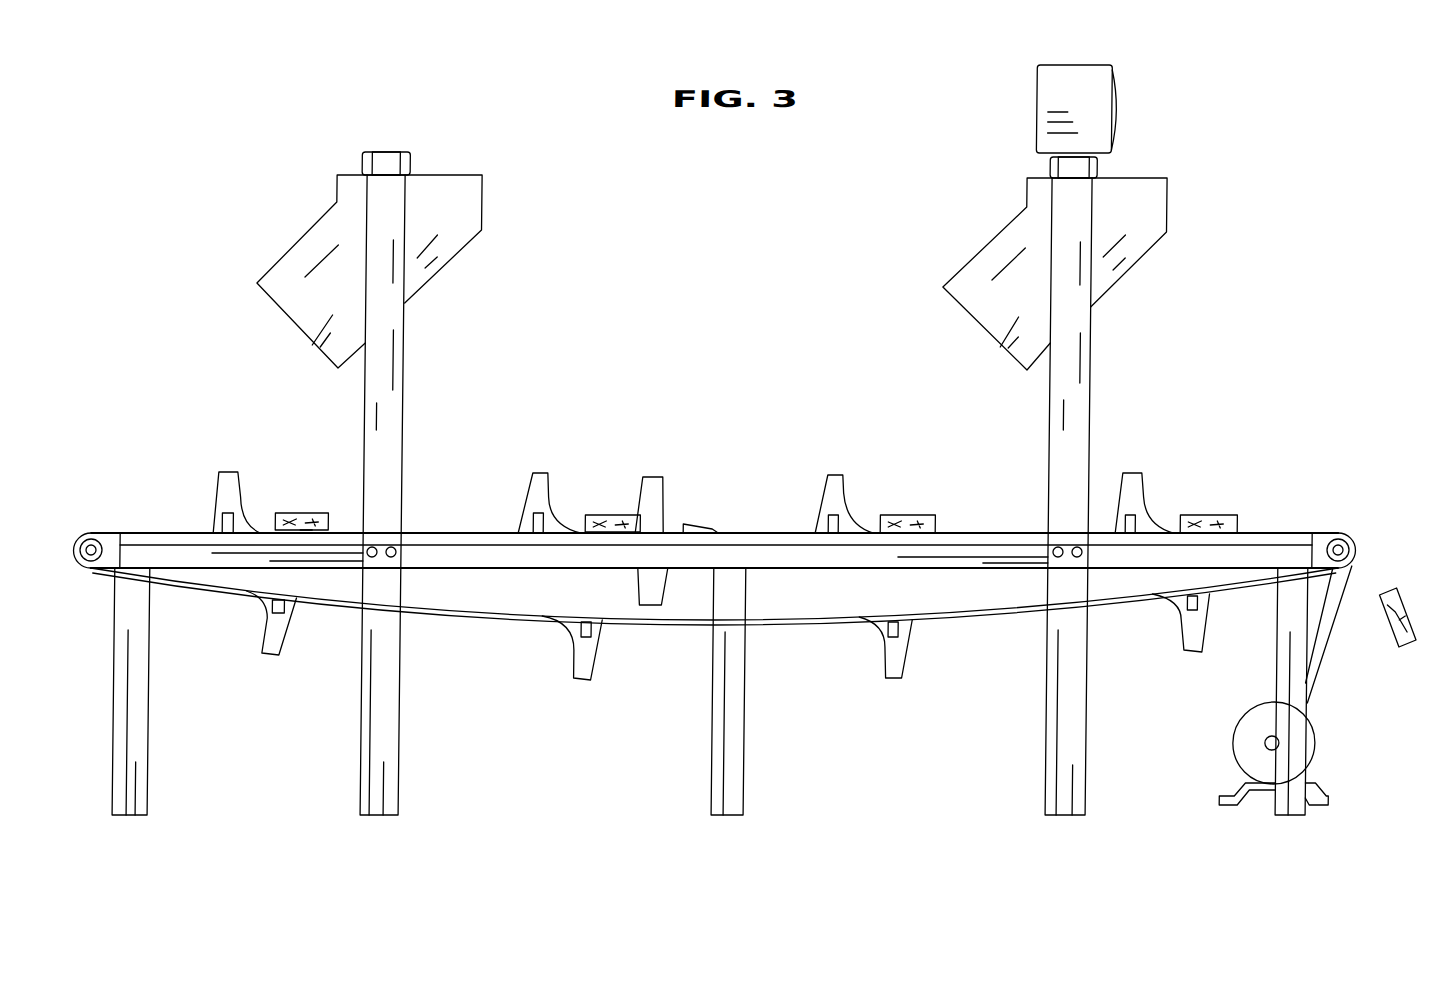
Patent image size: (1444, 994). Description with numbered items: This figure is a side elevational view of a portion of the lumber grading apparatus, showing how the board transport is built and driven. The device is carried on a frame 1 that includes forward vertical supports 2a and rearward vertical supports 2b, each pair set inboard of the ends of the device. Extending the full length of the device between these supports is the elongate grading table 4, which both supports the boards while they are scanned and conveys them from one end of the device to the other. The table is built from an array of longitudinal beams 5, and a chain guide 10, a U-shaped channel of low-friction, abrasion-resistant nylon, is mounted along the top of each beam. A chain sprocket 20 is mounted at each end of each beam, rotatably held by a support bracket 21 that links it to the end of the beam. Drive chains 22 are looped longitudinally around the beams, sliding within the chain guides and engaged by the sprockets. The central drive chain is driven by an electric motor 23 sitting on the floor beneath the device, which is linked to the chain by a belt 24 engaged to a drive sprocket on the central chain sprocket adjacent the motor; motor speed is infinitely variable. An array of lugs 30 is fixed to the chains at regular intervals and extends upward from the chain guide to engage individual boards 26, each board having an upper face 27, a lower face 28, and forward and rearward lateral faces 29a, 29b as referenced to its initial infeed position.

The frame 1 is at (478, 431).
The forward vertical supports 2a is at (1068, 383).
The rearward vertical supports 2b is at (387, 397).
The grading table 4 is at (988, 496).
The longitudinal beams 5 is at (467, 562).
The chain guide 10 is at (158, 531).
The chain sprocket 20 is at (82, 532).
The support bracket 21 is at (96, 570).
The drive chains 22 is at (180, 585).
The electric motor 23 is at (1248, 737).
The belt 24 is at (1328, 636).
The boards 26 is at (312, 525).
The upper face 27 is at (297, 513).
The lower face 28 is at (305, 530).
The forward lateral face 29a is at (330, 514).
The rearward lateral face 29b is at (270, 514).
The lugs 30 is at (828, 495).